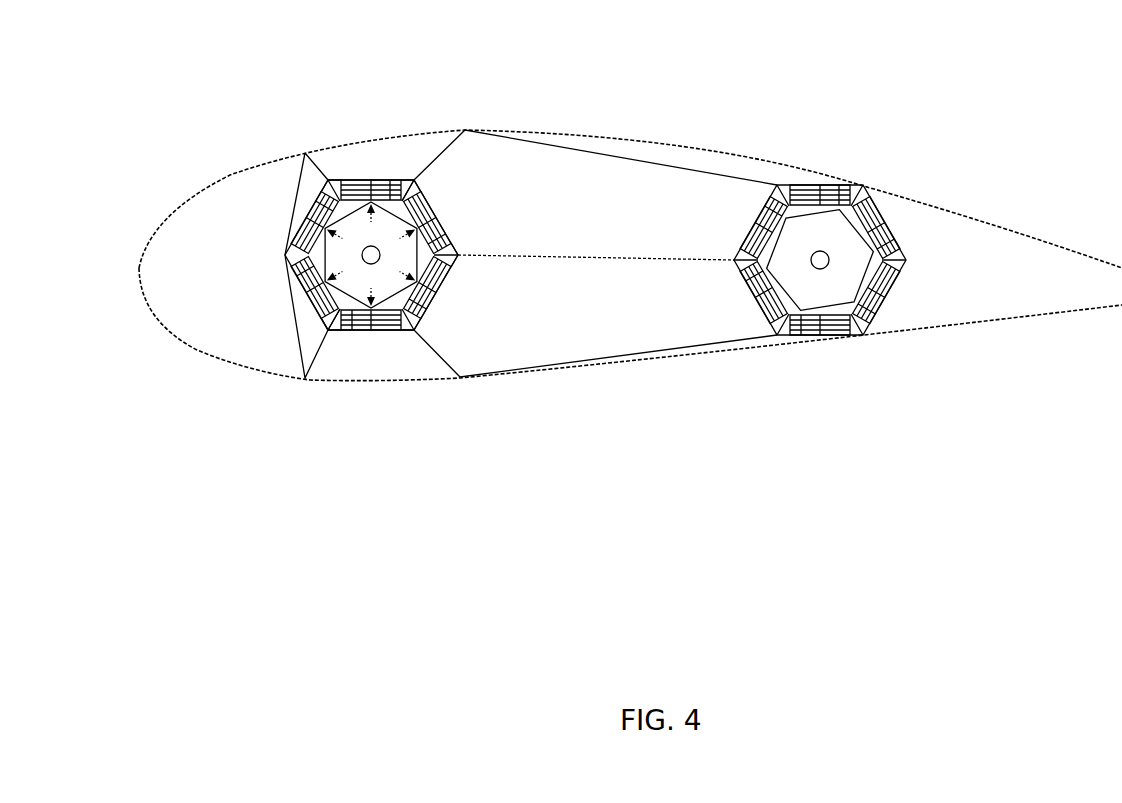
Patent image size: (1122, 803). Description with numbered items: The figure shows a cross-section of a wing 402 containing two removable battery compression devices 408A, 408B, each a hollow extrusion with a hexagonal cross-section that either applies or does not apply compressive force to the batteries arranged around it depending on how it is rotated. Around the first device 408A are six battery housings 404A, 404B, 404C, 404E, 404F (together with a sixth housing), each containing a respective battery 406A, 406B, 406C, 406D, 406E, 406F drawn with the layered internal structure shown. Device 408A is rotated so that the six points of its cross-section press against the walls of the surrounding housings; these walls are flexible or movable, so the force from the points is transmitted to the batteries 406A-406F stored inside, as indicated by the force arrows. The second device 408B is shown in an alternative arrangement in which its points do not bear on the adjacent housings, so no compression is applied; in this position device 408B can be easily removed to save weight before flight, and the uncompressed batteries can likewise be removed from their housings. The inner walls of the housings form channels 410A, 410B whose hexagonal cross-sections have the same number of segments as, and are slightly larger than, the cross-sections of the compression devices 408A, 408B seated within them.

The wing 402 is at (541, 135).
The battery housing 404A is at (405, 192).
The battery housing 404B is at (417, 182).
The battery housing 404C is at (458, 258).
The battery housing 404E is at (326, 328).
The battery housing 404F is at (324, 192).
The battery 406A is at (372, 195).
The battery 406B is at (432, 204).
The battery 406C is at (432, 302).
The battery 406D is at (360, 320).
The battery 406E is at (308, 300).
The battery 406F is at (312, 216).
The removable battery compression device 408A is at (390, 215).
The removable battery compression device 408B is at (798, 238).
The channel 410A is at (403, 325).
The channel 410B is at (845, 307).